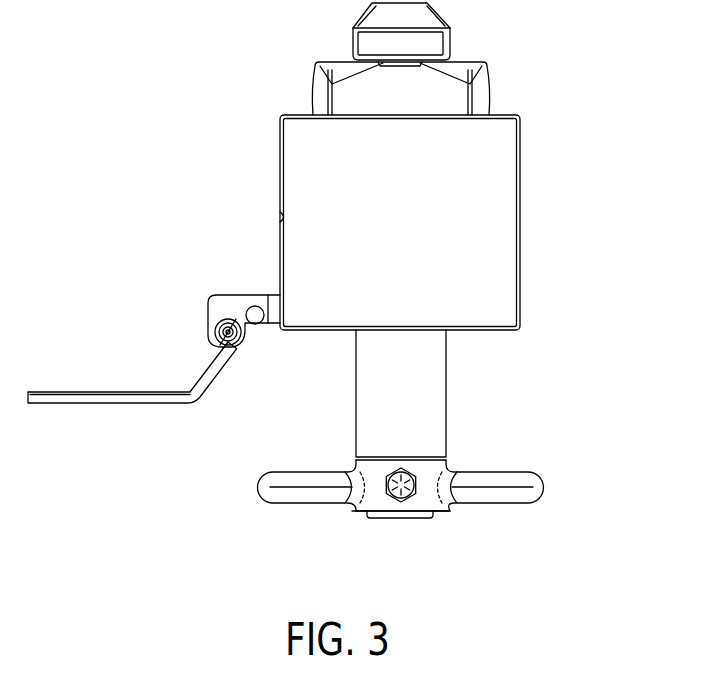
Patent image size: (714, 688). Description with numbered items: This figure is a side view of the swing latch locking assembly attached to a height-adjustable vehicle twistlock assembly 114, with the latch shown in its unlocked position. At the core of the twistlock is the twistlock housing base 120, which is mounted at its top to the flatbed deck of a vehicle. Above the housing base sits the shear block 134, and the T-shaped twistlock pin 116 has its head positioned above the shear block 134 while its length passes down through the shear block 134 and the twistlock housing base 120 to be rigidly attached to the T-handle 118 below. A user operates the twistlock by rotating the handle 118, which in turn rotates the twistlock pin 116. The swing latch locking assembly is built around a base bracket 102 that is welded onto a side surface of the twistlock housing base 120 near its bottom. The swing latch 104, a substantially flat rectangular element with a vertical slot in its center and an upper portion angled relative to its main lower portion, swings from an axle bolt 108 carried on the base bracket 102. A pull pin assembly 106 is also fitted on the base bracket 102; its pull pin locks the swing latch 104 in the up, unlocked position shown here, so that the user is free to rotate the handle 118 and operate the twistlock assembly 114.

The base bracket 102 is at (220, 295).
The swing latch 104 is at (70, 392).
The pull pin assembly 106 is at (193, 330).
The axle bolt 108 is at (255, 306).
The height-adjustable vehicle twistlock assembly 114 is at (577, 193).
The T-shaped twistlock pin 116 is at (450, 38).
The handle 118 is at (507, 493).
The twistlock housing base 120 is at (521, 247).
The shear block 134 is at (485, 93).